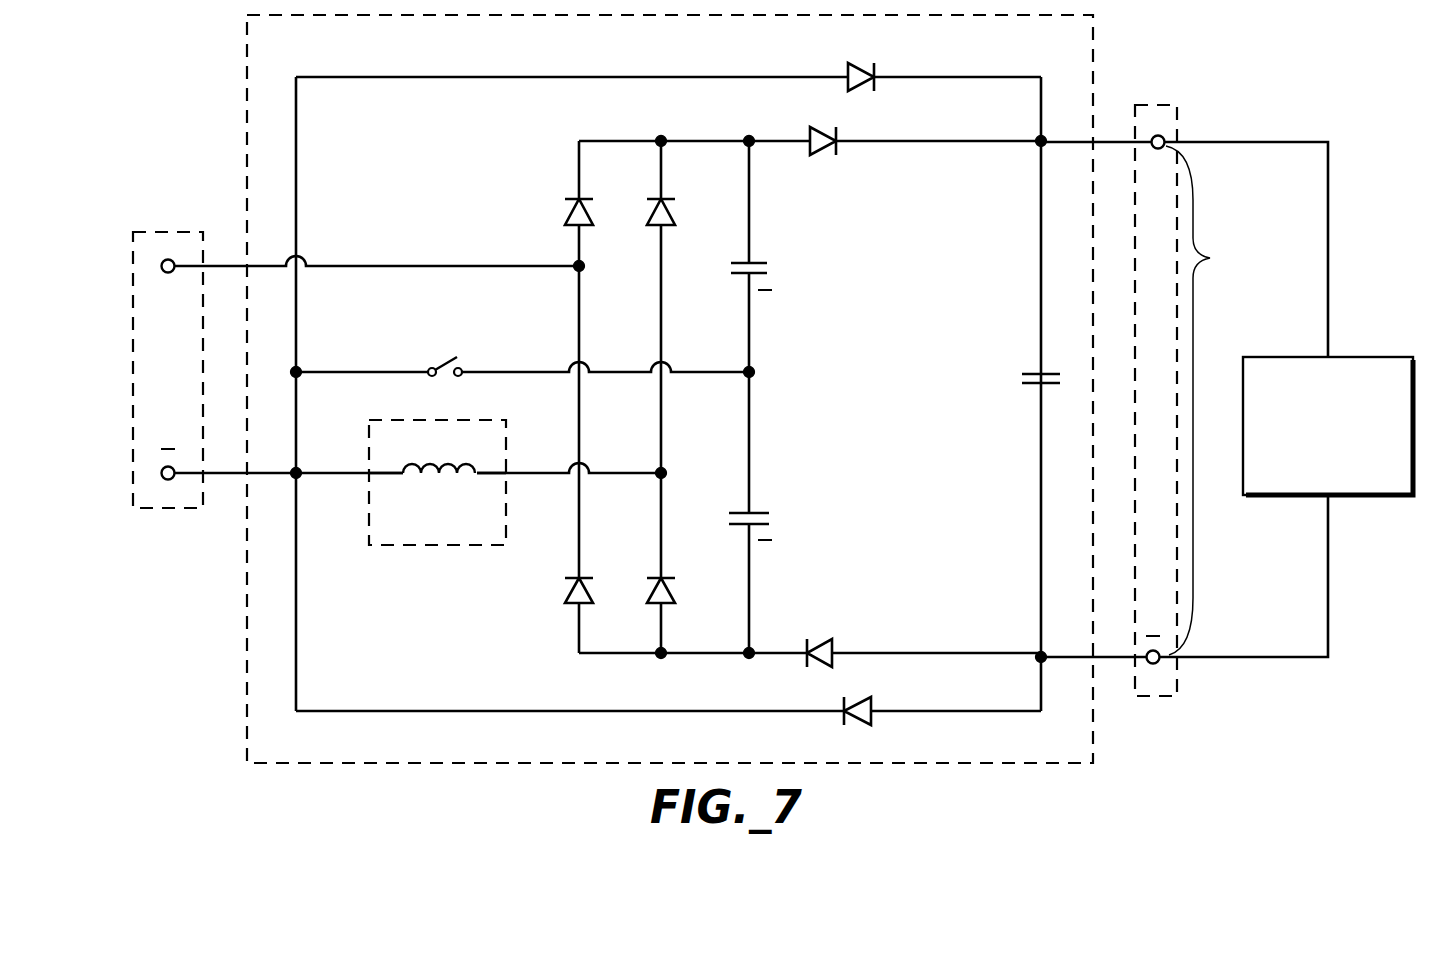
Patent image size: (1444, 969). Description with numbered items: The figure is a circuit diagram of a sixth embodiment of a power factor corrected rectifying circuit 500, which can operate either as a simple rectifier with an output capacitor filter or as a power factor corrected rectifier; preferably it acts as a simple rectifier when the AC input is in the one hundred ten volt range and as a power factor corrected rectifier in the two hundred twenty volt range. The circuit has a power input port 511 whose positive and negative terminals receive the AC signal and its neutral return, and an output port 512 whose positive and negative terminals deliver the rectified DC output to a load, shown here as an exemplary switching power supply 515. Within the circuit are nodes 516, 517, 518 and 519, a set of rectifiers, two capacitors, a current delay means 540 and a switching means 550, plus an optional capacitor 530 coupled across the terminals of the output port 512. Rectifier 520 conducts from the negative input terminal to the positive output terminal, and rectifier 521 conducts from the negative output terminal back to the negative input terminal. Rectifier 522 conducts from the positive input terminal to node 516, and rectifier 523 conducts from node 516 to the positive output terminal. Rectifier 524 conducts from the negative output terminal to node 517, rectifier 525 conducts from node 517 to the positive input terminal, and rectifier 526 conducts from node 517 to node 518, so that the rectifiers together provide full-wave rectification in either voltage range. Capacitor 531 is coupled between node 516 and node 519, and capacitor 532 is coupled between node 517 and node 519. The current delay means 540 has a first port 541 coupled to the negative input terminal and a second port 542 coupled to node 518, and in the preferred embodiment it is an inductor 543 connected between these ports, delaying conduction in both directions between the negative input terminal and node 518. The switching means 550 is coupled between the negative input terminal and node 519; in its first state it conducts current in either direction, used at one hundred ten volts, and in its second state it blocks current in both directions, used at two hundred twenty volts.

The power factor corrected rectifying circuit 500 is at (244, 724).
The power input port 511 is at (175, 228).
The output port 512 is at (1161, 101).
The switching power supply 515 is at (1306, 356).
The node 516 is at (749, 137).
The node 517 is at (751, 648).
The node 518 is at (664, 470).
The node 519 is at (752, 369).
The rectifier 520 is at (856, 66).
The rectifier 521 is at (859, 704).
The rectifier 522 is at (586, 197).
The rectifier 523 is at (821, 130).
The rectifier 524 is at (668, 197).
The rectifier 525 is at (586, 575).
The rectifier 526 is at (668, 575).
The optional capacitor 530 is at (1036, 372).
The capacitor 531 is at (746, 261).
The capacitor 532 is at (746, 511).
The current delay means 540 is at (434, 512).
The first port 541 is at (368, 471).
The second port 542 is at (507, 478).
The inductor 543 is at (432, 480).
The switching means 550 is at (450, 358).